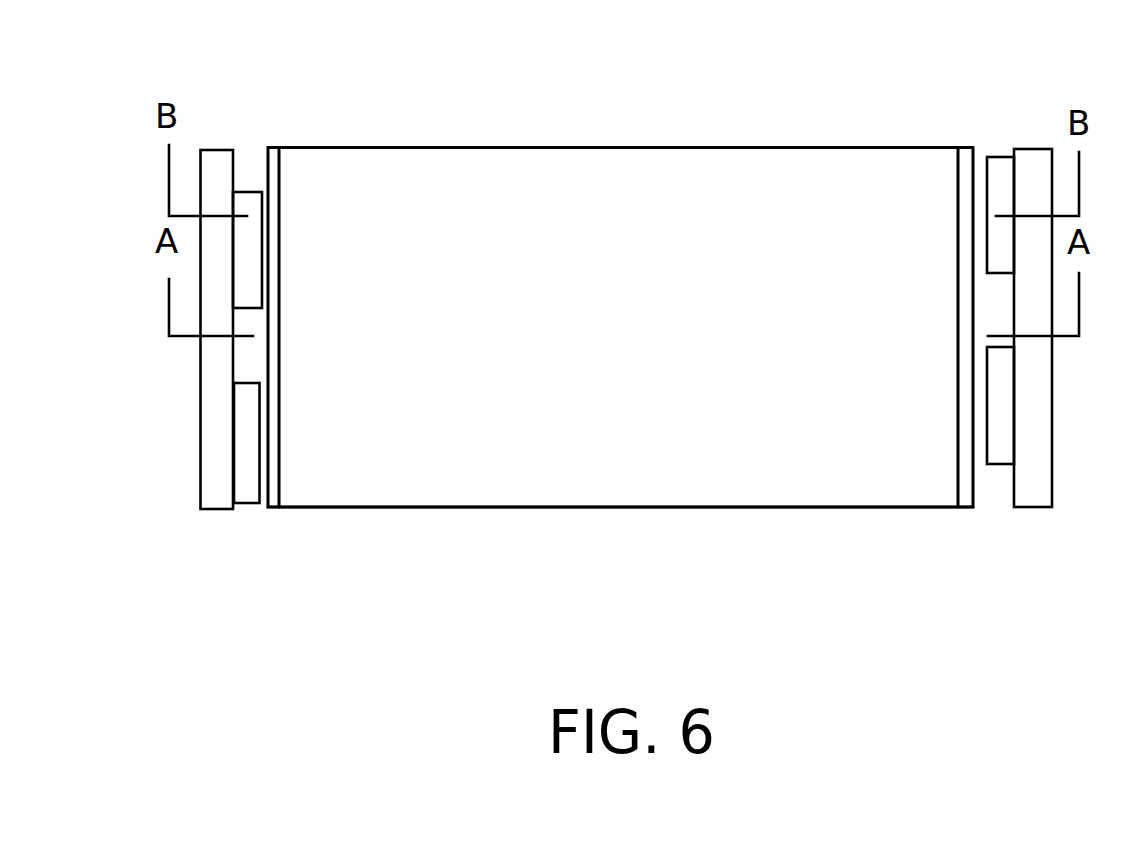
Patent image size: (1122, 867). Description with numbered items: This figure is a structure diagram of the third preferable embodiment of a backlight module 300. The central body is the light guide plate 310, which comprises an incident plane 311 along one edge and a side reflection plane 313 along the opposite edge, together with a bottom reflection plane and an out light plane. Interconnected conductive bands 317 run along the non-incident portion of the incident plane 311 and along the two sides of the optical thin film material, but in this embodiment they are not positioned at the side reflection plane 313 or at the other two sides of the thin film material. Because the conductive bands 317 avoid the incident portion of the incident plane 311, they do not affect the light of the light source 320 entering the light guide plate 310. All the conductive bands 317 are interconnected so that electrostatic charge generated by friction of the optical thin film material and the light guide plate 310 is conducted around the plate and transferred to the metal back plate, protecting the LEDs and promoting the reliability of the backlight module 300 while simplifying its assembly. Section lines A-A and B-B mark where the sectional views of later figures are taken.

The backlight module 300 is at (402, 147).
The light guide plate 310 is at (465, 177).
The incident plane 311 is at (274, 158).
The side reflection plane 313 is at (532, 507).
The conductive bands 317 is at (963, 167).
The light source 320 is at (1002, 173).